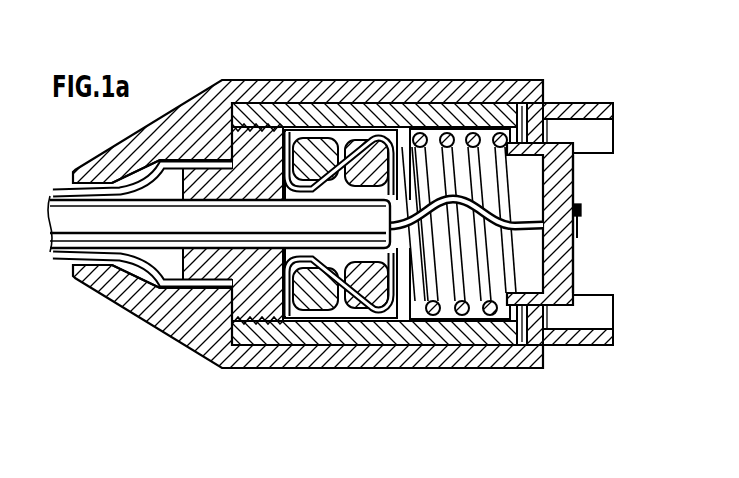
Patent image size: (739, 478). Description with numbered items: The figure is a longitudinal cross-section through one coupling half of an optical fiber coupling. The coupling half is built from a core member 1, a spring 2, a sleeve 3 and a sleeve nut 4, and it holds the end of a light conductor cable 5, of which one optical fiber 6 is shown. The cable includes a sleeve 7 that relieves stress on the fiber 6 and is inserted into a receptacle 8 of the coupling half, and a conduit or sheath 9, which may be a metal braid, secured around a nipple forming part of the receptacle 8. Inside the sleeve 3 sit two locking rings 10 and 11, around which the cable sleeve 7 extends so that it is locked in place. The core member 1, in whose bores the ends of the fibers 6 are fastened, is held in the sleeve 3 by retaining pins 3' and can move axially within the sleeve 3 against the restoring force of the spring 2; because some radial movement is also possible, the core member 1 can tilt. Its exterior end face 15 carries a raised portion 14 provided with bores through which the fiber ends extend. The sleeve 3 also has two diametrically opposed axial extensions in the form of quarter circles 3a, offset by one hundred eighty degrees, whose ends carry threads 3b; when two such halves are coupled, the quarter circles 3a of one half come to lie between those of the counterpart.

The core member 1 is at (529, 368).
The spring 2 is at (408, 348).
The sleeve 3 is at (374, 258).
The retaining pins 3' is at (505, 258).
The quarter circles 3a is at (611, 103).
The threads 3b is at (609, 350).
The sleeve nut 4 is at (236, 368).
The light conductor cable 5 is at (123, 235).
The optical fiber 6 is at (455, 200).
The sleeve 7 is at (340, 300).
The receptacle 8 is at (214, 320).
The conduit or sheath 9 is at (140, 277).
The locking ring 10 is at (314, 150).
The locking ring 11 is at (376, 150).
The raised portion 14 is at (578, 217).
The exterior end face 15 is at (576, 278).